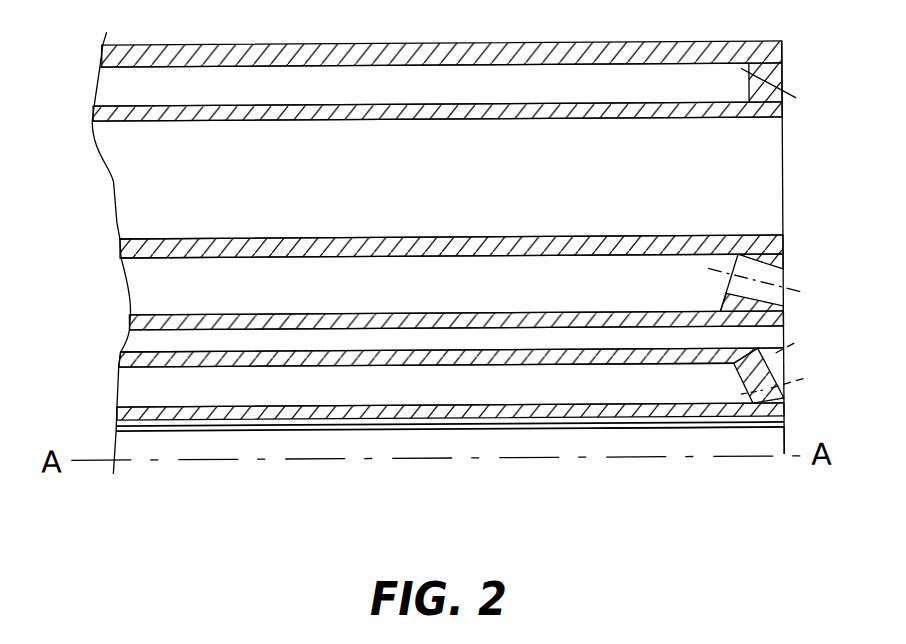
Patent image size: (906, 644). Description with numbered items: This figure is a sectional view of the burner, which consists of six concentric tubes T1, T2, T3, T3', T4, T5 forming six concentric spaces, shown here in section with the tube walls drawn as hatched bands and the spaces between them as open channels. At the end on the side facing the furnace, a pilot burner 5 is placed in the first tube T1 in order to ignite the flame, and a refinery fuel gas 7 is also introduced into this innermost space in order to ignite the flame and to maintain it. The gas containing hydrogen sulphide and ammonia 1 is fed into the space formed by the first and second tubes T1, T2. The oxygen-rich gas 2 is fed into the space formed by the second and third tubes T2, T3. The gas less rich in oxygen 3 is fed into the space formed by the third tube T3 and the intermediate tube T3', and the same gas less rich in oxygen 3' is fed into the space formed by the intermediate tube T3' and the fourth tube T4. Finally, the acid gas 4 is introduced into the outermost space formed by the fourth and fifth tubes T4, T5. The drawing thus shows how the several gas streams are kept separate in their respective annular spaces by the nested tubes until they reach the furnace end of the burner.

The gas containing hydrogen sulphide and ammonia 1 is at (527, 380).
The oxygen-rich gas 2 is at (423, 338).
The gas less rich in oxygen 3 is at (464, 390).
The gas less rich in oxygen 3' is at (438, 322).
The acid gas 4 is at (162, 83).
The pilot burner 5 is at (620, 420).
The refinery fuel gas 7 is at (703, 437).
The first tube T1 is at (173, 413).
The second tube T2 is at (177, 361).
The third tube T3 is at (410, 323).
The intermediate tube T3' is at (410, 249).
The fourth tube T4 is at (150, 112).
The fifth tube T5 is at (148, 57).